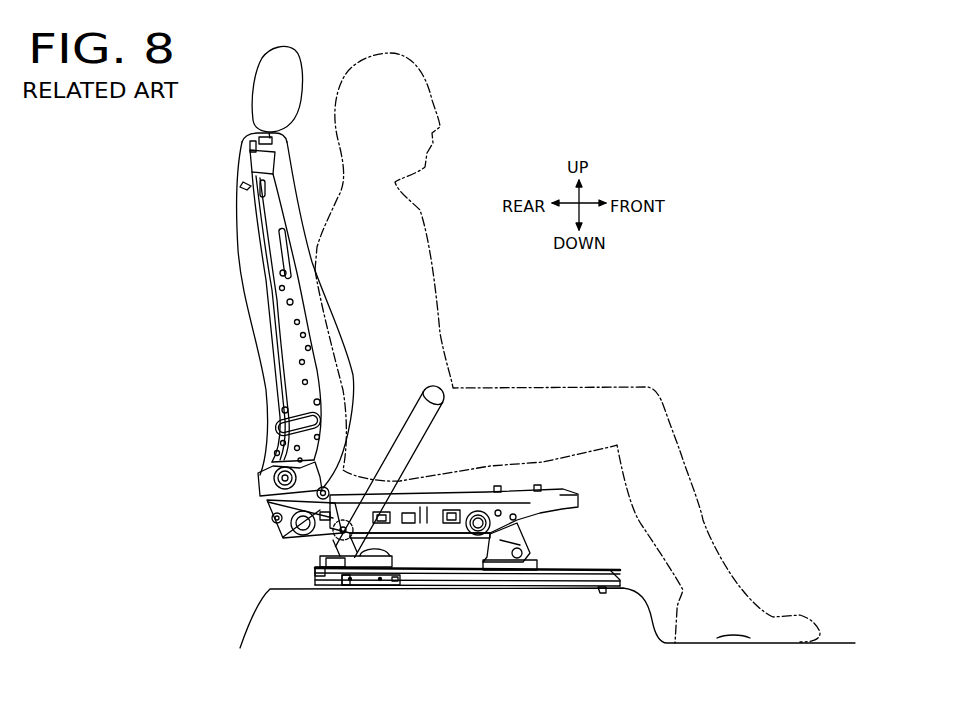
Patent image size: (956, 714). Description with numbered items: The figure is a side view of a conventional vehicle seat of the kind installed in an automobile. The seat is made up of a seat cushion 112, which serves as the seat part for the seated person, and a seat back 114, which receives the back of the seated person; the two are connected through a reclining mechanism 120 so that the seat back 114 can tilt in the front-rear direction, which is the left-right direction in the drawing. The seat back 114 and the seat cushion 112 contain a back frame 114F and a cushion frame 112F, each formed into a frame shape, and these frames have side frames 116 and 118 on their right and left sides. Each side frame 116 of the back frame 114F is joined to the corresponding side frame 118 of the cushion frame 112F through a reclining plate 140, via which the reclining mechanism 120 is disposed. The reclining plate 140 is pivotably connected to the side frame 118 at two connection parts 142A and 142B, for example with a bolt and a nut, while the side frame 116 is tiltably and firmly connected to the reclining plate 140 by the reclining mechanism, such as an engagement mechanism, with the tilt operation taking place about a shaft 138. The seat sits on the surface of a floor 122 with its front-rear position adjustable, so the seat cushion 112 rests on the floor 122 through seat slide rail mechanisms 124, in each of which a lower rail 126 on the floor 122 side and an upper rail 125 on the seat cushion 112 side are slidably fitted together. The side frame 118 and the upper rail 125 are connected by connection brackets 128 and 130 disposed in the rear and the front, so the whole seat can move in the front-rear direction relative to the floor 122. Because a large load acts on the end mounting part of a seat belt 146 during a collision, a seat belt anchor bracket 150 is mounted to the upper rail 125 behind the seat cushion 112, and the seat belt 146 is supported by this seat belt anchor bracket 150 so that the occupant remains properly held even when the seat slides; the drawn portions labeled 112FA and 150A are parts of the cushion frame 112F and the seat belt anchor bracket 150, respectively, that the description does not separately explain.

The seat back 114 is at (230, 207).
The back frame 114F is at (268, 230).
The side frame 116 is at (236, 299).
The reclining mechanism 120 is at (280, 476).
The shaft 138 is at (272, 479).
The reclining plate 140 is at (262, 491).
The connection part 142A is at (270, 519).
The connection part 142B is at (330, 491).
The connection bracket 128 is at (318, 545).
The upper rail 125 is at (316, 571).
The lower rail 126 is at (352, 573).
The seat belt anchor bracket 150 is at (394, 578).
The slider front portion 150A is at (345, 580).
The seat cushion 112 is at (449, 539).
The cushion frame 112F is at (433, 542).
The side frame 118 is at (420, 597).
The seat cushion frame lower portion 112FA is at (333, 568).
The seat slide rail mechanism 124 is at (505, 588).
The floor 122 is at (547, 578).
The connection bracket 130 is at (503, 522).
The seat belt 146 is at (426, 396).